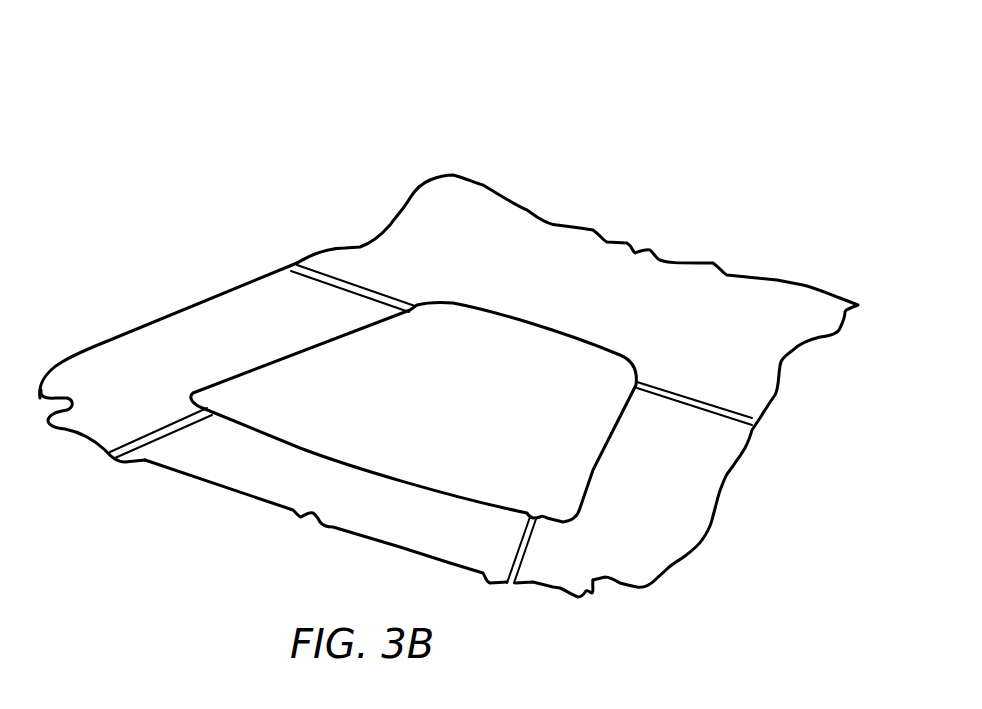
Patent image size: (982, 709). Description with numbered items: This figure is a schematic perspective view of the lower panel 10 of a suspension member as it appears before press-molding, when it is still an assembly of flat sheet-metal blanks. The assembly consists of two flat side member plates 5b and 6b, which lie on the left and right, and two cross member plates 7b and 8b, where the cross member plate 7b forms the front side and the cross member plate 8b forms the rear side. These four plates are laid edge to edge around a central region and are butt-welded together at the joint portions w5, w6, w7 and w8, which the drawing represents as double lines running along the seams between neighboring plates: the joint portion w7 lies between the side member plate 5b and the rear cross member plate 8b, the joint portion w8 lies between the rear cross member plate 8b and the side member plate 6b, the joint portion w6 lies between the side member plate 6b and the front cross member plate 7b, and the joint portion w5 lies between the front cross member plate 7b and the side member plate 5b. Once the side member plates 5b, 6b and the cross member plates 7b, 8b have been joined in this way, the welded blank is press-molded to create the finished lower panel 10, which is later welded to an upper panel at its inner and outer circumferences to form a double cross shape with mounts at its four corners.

The lower panel 10 is at (468, 173).
The side member plate 5b is at (267, 303).
The cross member plate 8b is at (560, 193).
The side member plate 6b is at (670, 472).
The cross member plate 7b is at (293, 495).
The joint portion w5 is at (182, 433).
The joint portion w6 is at (527, 553).
The joint portion w7 is at (358, 290).
The joint portion w8 is at (703, 398).